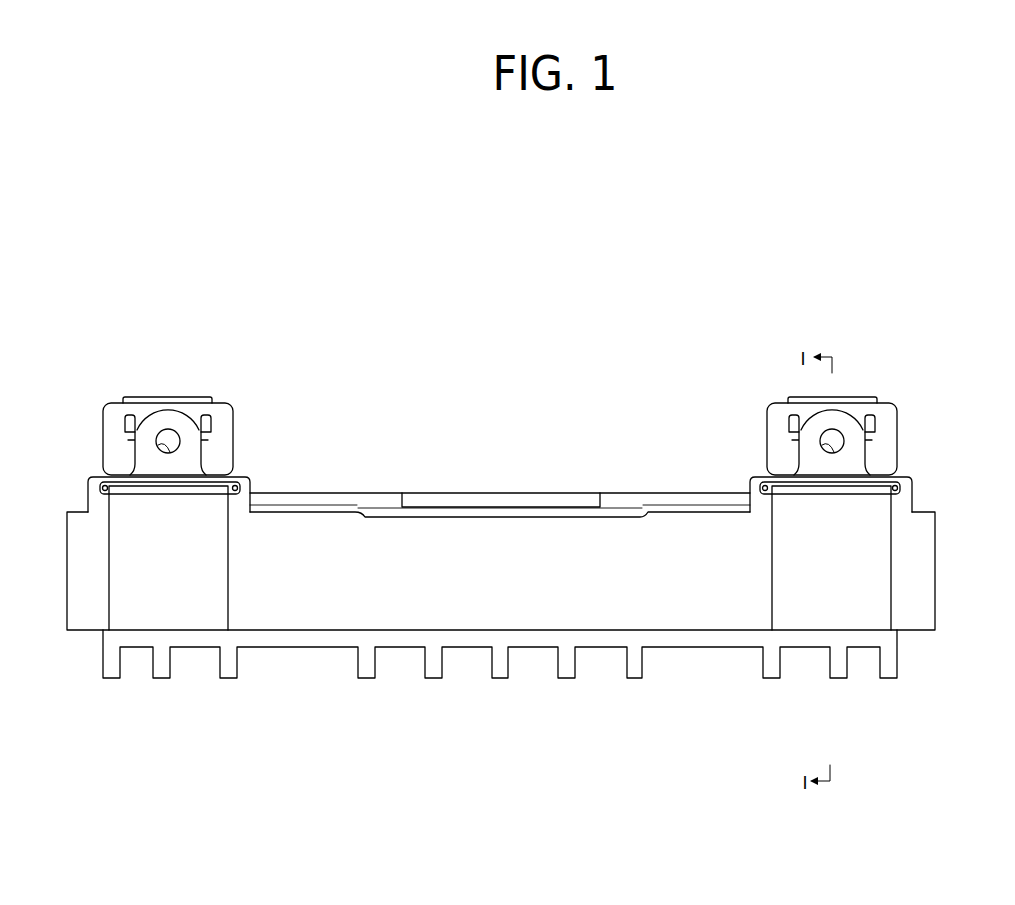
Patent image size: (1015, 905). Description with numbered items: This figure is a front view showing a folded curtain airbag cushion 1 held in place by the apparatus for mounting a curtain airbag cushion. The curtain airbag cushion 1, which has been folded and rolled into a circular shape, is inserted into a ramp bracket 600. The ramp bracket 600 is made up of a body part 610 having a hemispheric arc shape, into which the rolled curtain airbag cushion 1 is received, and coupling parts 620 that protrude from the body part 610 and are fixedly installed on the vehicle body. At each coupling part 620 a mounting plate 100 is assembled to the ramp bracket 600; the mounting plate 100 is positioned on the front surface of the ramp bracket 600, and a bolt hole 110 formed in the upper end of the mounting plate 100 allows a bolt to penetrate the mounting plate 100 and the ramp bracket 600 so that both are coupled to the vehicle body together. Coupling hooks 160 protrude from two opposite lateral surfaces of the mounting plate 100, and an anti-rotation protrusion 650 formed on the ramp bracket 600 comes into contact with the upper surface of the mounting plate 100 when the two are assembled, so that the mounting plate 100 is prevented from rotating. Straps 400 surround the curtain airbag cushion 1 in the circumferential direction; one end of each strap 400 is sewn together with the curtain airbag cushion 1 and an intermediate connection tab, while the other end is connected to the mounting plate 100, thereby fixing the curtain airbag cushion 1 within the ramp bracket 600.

The curtain airbag cushion 1 is at (463, 602).
The mounting plate 100 is at (172, 417).
The bolt hole 110 is at (156, 441).
The coupling hook 160 is at (130, 434).
The strap 400 is at (187, 602).
The ramp bracket 600 is at (531, 487).
The body part 610 is at (380, 503).
The coupling part 620 is at (220, 453).
The anti-rotation protrusion 650 is at (145, 398).